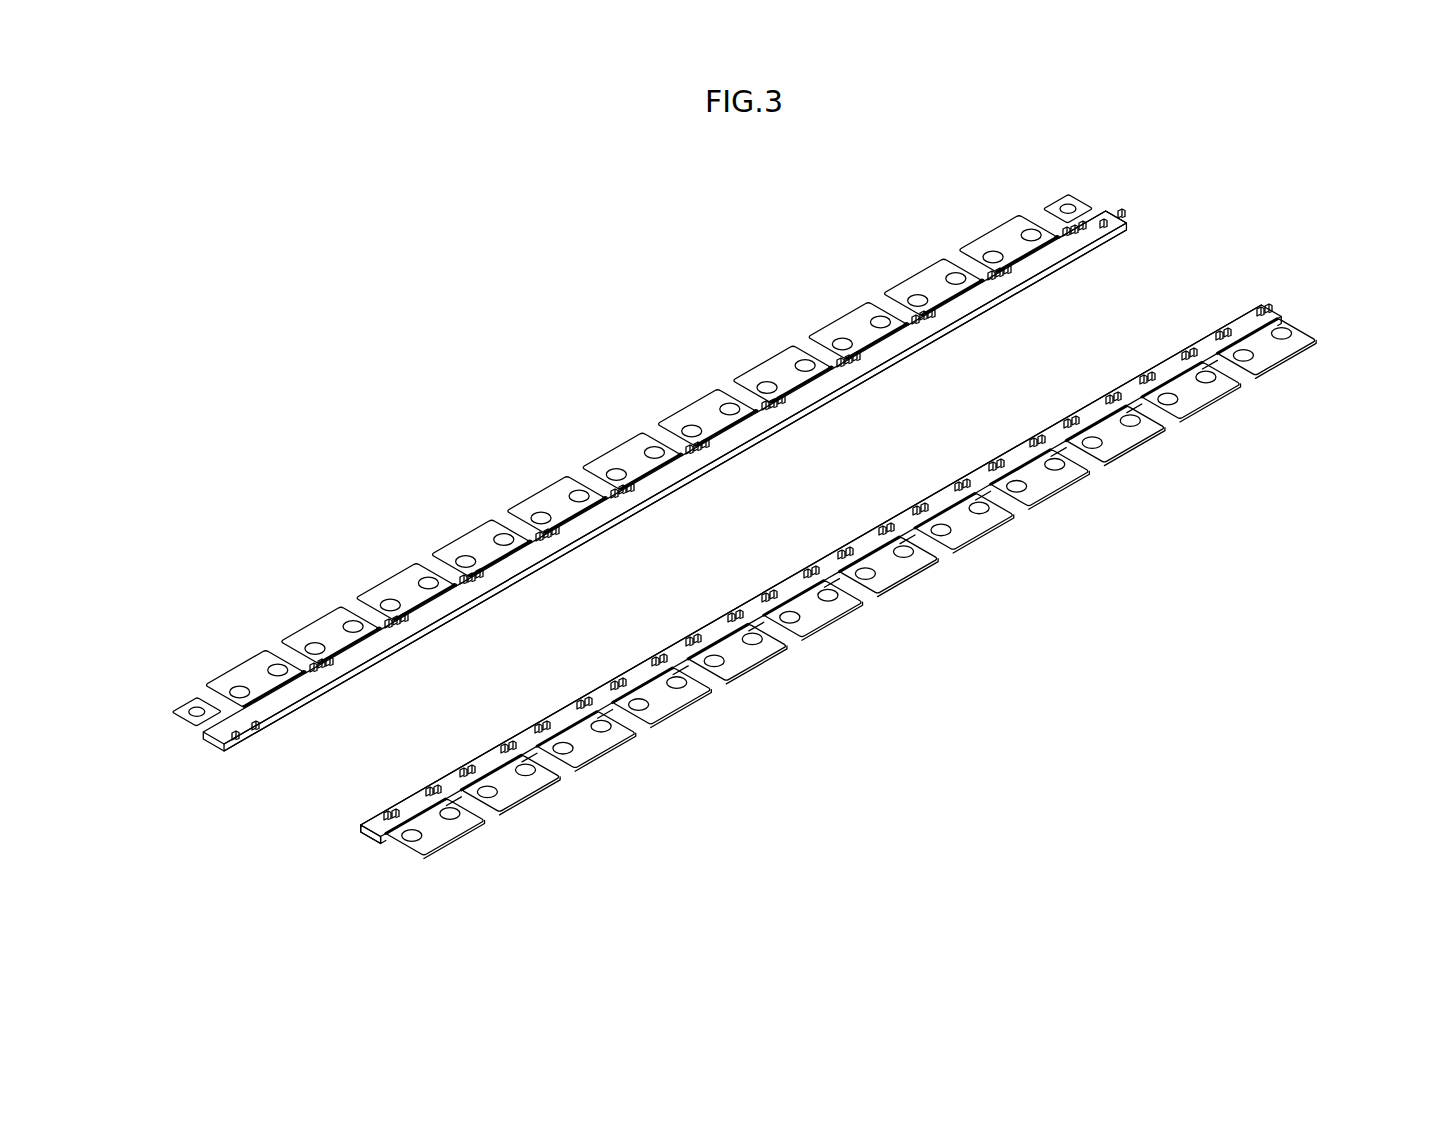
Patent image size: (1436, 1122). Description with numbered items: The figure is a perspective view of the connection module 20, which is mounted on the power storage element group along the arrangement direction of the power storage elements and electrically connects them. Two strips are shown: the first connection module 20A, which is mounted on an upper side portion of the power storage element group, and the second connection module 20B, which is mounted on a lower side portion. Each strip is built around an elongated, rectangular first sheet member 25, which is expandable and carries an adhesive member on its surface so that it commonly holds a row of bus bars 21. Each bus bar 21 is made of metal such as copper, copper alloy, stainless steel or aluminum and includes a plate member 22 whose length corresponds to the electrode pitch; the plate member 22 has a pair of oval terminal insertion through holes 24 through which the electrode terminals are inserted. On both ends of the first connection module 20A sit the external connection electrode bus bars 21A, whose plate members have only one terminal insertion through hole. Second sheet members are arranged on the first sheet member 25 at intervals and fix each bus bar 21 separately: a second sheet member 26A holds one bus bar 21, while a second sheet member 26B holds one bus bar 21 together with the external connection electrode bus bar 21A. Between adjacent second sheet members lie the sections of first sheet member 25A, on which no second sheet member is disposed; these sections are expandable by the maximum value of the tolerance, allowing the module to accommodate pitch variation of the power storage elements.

The connection module 20 is at (1123, 132).
The first connection module 20A is at (1108, 196).
The second connection module 20B is at (1322, 316).
The bus bar 21 is at (760, 350).
The external connection electrode bus bar 21A is at (182, 696).
The plate member 22 is at (855, 320).
The terminal insertion through hole 24 is at (428, 575).
The first sheet member 25 is at (210, 747).
The sections of first sheet member 25A is at (327, 680).
The second sheet member 26A is at (968, 305).
The second sheet member 26B is at (1081, 242).